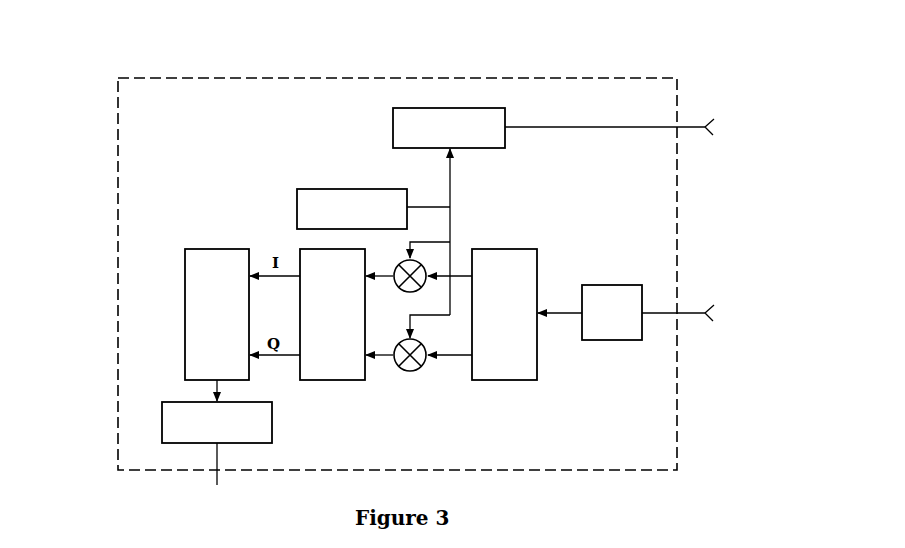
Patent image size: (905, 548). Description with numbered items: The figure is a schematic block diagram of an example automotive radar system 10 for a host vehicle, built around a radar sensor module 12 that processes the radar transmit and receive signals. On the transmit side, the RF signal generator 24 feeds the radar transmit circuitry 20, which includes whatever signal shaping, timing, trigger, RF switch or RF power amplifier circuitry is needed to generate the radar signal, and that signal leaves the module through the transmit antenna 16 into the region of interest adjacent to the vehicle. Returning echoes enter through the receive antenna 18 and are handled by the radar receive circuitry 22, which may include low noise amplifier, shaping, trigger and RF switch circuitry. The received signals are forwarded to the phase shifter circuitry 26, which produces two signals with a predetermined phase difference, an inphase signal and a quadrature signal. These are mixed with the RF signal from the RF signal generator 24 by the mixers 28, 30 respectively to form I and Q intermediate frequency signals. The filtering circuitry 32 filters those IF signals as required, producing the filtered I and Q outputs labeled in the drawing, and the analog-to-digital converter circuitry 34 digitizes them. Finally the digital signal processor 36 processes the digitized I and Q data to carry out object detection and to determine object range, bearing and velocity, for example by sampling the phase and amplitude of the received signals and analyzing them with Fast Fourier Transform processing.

The automotive radar system 10 is at (97, 68).
The radar sensor module 12 is at (397, 274).
The transmit antenna 16 is at (711, 134).
The receive antenna 18 is at (711, 320).
The radar transmit circuitry 20 is at (449, 128).
The radar receive circuitry 22 is at (612, 312).
The RF signal generator 24 is at (352, 209).
The phase shifter circuitry 26 is at (504, 314).
The mixer 28 is at (400, 289).
The mixer 30 is at (400, 368).
The filtering circuitry 32 is at (332, 314).
The analog-to-digital converter circuitry 34 is at (217, 314).
The digital signal processor 36 is at (217, 422).